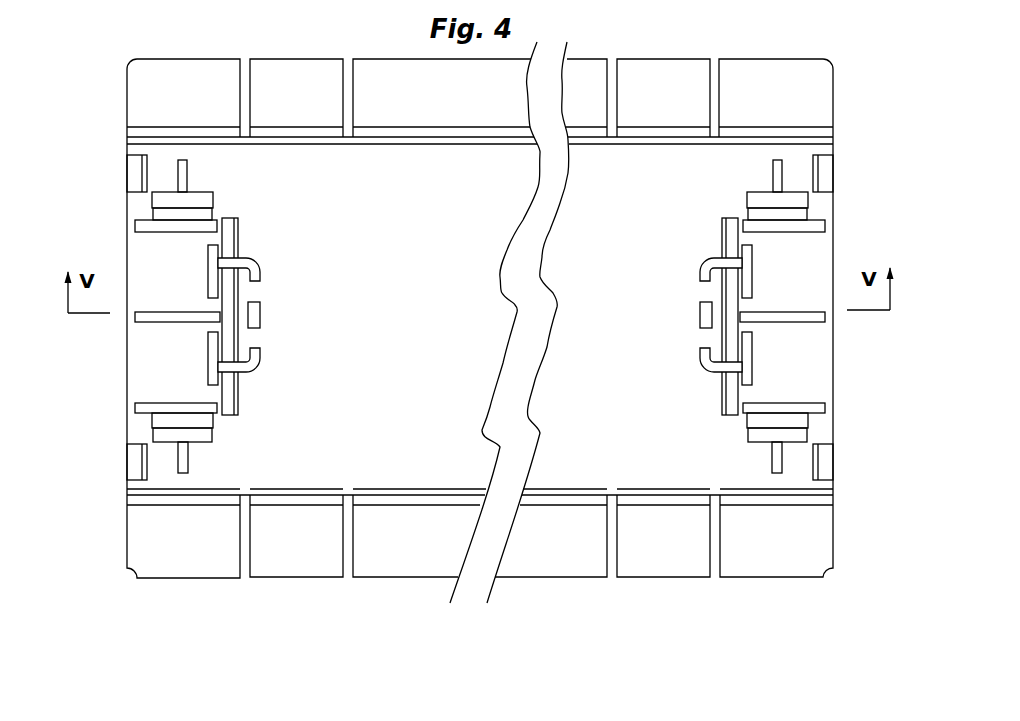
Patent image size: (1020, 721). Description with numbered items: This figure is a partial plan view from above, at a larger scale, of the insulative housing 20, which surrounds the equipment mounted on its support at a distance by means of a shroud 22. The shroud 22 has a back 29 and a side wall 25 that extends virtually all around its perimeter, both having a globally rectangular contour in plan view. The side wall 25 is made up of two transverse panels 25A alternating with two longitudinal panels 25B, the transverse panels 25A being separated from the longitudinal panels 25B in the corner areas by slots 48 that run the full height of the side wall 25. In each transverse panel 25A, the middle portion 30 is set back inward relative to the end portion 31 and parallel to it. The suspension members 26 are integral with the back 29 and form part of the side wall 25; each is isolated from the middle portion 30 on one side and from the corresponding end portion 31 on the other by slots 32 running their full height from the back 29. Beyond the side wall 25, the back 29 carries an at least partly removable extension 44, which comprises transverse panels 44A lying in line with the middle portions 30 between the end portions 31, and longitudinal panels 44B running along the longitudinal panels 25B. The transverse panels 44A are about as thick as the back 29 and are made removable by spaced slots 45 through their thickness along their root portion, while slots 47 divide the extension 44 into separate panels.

The insulative housing 20 is at (123, 583).
The shroud 22 is at (810, 512).
The side wall 25 is at (748, 120).
The transverse panels 25A is at (268, 386).
The longitudinal panels 25B is at (296, 118).
The suspension members 26 is at (219, 198).
The back 29 is at (447, 310).
The middle portion 30 is at (240, 296).
The end portion 31 is at (135, 172).
The slots 32 is at (220, 417).
The extension 44 is at (672, 630).
The transverse panels 44A is at (123, 375).
The longitudinal panels 44B is at (657, 56).
The slots 45 is at (746, 280).
The slots 47 is at (805, 240).
The slots 48 is at (137, 150).